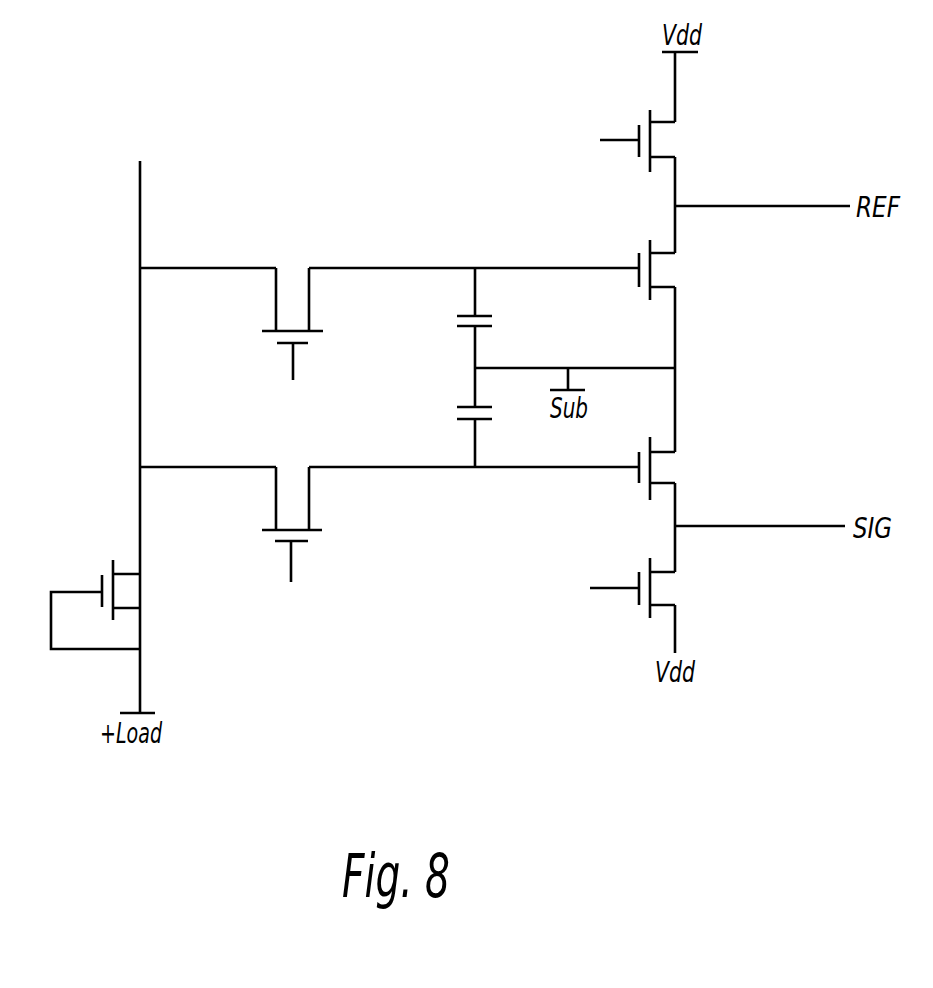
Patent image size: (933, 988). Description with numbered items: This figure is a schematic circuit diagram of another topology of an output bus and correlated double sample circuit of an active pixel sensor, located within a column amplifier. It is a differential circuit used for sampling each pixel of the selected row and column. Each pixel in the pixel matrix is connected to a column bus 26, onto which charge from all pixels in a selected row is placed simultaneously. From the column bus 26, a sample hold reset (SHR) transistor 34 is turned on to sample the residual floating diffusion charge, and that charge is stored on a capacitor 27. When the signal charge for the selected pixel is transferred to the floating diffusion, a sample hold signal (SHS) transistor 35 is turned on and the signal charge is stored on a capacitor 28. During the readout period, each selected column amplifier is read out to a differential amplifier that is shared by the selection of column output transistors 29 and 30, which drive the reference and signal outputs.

The column bus 26 is at (150, 201).
The sample hold reset (SHR) transistor 34 is at (297, 256).
The sample hold signal (SHS) transistor 35 is at (330, 532).
The capacitor 27 is at (504, 322).
The capacitor 28 is at (445, 404).
The column output transistor 29 is at (679, 145).
The column output transistor 30 is at (677, 596).